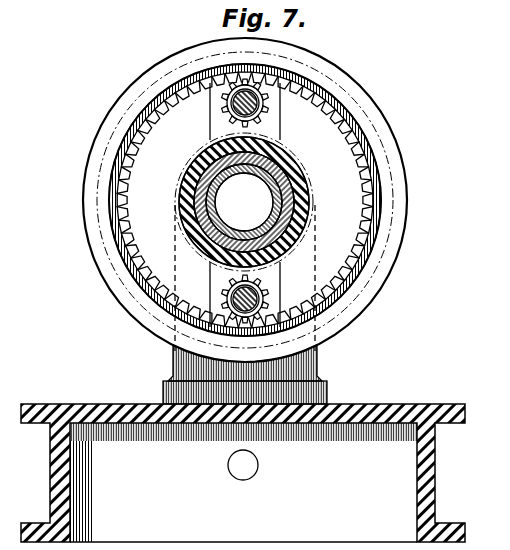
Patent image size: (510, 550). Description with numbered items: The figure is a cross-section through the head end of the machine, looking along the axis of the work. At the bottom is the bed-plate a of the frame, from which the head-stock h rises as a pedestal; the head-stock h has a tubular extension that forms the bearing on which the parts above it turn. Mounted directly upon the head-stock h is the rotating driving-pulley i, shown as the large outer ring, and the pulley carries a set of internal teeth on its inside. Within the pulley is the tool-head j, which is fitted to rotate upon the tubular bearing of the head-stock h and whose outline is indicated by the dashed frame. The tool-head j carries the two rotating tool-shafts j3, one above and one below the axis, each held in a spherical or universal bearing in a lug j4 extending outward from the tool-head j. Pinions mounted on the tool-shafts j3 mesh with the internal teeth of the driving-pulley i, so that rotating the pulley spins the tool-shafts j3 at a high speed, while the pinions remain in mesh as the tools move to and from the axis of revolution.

The driving-pulley i is at (414, 196).
The head-stock h is at (333, 383).
The tool-head j is at (315, 216).
The tool-shafts j3 is at (268, 111).
The lugs j4 is at (222, 108).
The bed-plate a is at (243, 473).